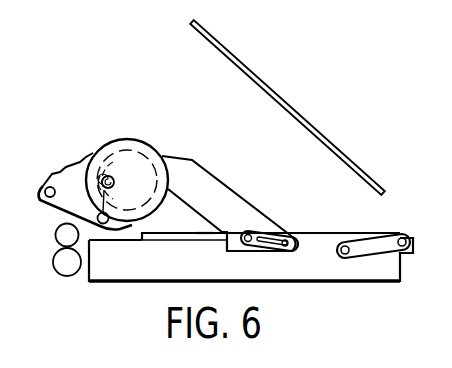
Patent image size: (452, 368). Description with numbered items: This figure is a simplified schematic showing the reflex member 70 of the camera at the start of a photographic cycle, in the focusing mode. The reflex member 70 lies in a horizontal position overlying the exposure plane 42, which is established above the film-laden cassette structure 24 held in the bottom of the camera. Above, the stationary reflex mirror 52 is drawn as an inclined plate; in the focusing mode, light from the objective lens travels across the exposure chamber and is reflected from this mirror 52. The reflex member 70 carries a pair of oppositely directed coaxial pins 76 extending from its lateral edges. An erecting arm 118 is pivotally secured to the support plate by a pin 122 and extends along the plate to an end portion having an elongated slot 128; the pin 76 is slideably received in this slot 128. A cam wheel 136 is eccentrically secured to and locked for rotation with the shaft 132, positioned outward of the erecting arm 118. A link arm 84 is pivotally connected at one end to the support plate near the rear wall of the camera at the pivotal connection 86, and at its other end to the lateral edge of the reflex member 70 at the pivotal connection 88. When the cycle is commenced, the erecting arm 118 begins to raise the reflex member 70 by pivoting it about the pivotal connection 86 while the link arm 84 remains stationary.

The cassette structure 24 is at (148, 282).
The exposure plane 42 is at (205, 238).
The stationary reflex mirror 52 is at (289, 104).
The reflex member 70 is at (186, 233).
The coaxial pins 76 is at (251, 233).
The link arms 84 is at (375, 251).
The pivotal connection 86 is at (404, 239).
The pivotal connection 88 is at (344, 247).
The erecting arm 118 is at (220, 212).
The pin 122 is at (47, 188).
The elongated slot 128 is at (268, 252).
The shaft 132 is at (104, 176).
The cam wheel 136 is at (123, 137).